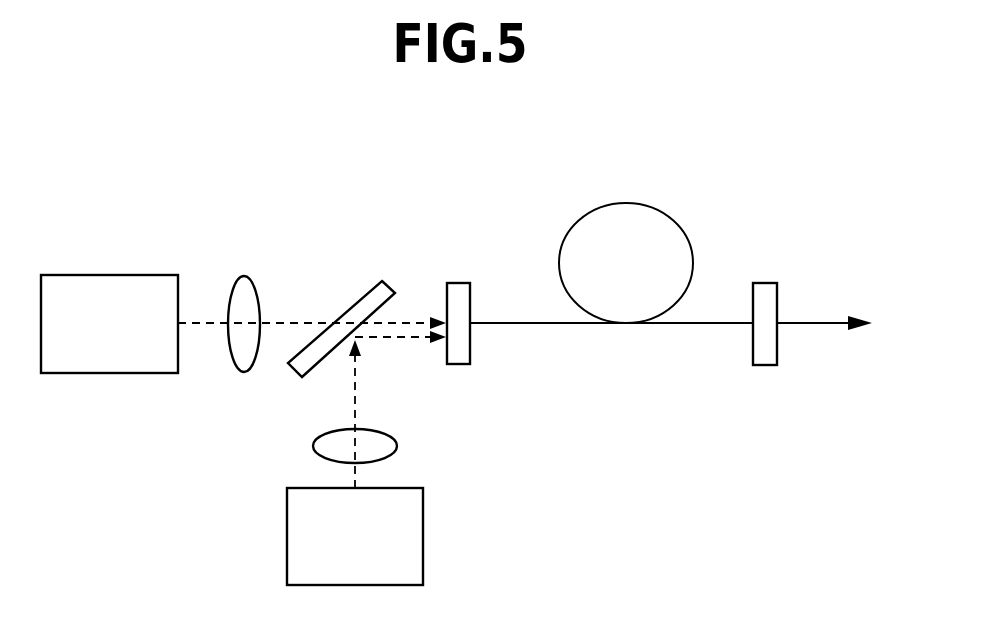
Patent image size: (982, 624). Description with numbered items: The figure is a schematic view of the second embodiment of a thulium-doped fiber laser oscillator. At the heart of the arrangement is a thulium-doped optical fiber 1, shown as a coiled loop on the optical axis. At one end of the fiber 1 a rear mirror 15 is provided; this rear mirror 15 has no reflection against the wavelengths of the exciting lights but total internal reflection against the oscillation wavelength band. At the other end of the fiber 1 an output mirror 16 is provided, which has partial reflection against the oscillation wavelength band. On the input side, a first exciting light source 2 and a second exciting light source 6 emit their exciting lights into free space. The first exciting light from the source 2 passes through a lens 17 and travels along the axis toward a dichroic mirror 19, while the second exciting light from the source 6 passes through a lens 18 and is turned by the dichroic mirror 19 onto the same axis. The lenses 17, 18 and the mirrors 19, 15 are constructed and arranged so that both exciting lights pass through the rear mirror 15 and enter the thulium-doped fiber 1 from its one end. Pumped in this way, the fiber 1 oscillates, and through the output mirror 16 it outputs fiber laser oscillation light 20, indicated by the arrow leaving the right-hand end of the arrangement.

The thulium-doped optical fiber 1 is at (620, 203).
The first exciting light source 2 is at (105, 275).
The second exciting light source 6 is at (423, 528).
The rear mirror 15 is at (455, 283).
The output mirror 16 is at (762, 283).
The lens 17 is at (243, 277).
The lens 18 is at (397, 446).
The dichroic mirror 19 is at (362, 282).
The fiber laser oscillation light 20 is at (820, 322).